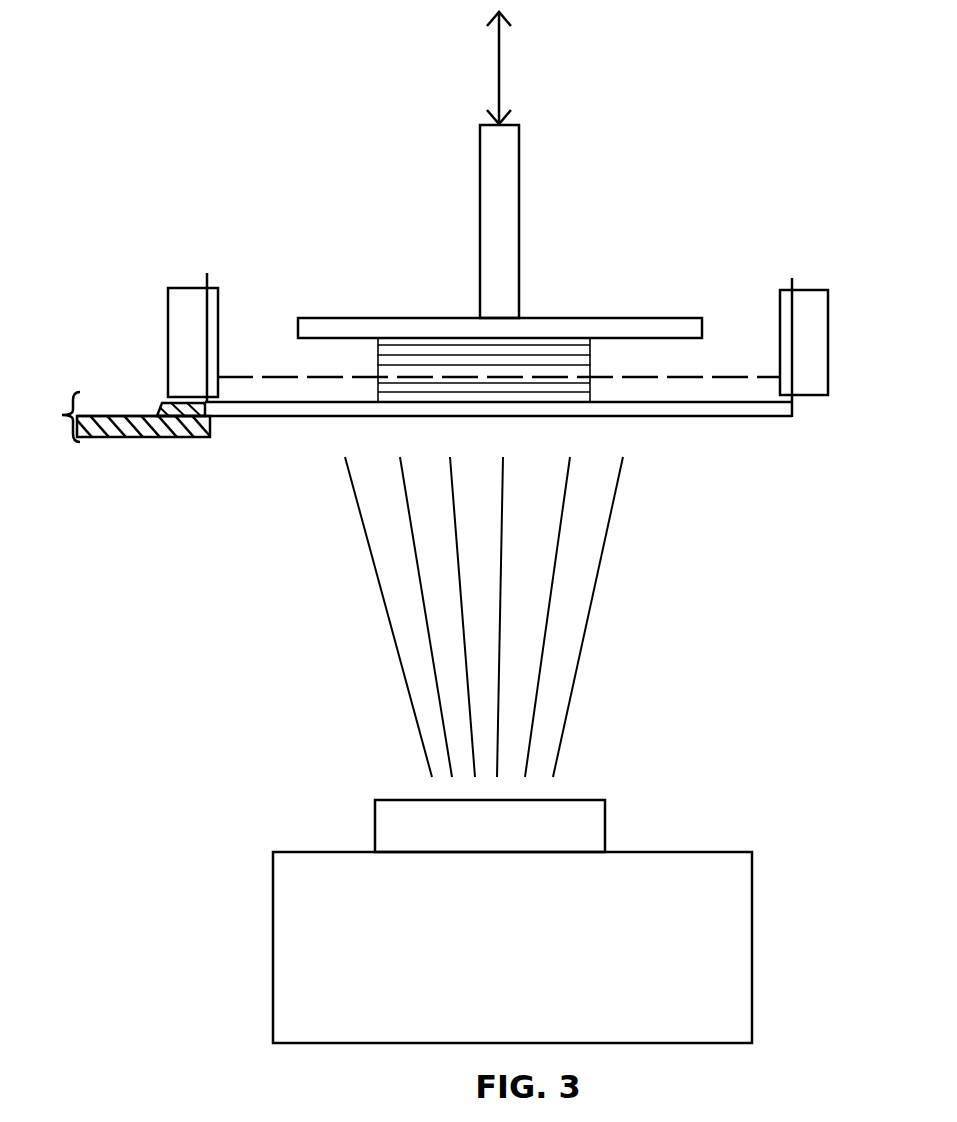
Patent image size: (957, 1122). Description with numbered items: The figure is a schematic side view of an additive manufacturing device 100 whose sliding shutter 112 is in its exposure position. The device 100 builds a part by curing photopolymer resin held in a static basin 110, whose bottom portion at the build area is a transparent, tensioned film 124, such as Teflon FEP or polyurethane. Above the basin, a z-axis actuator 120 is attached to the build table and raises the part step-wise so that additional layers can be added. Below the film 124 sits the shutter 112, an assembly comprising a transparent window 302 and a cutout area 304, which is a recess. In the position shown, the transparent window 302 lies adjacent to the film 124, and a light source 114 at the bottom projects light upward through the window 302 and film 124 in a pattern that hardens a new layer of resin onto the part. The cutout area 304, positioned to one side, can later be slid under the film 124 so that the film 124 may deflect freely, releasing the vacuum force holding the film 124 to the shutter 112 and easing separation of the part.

The additive manufacturing device 100 is at (783, 737).
The basin 110 is at (812, 292).
The sliding shutter 112 is at (72, 416).
The light source 114 is at (667, 957).
The z-axis actuator 120 is at (500, 70).
The film 124 is at (758, 401).
The transparent window 302 is at (705, 408).
The cutout area 304 is at (135, 412).